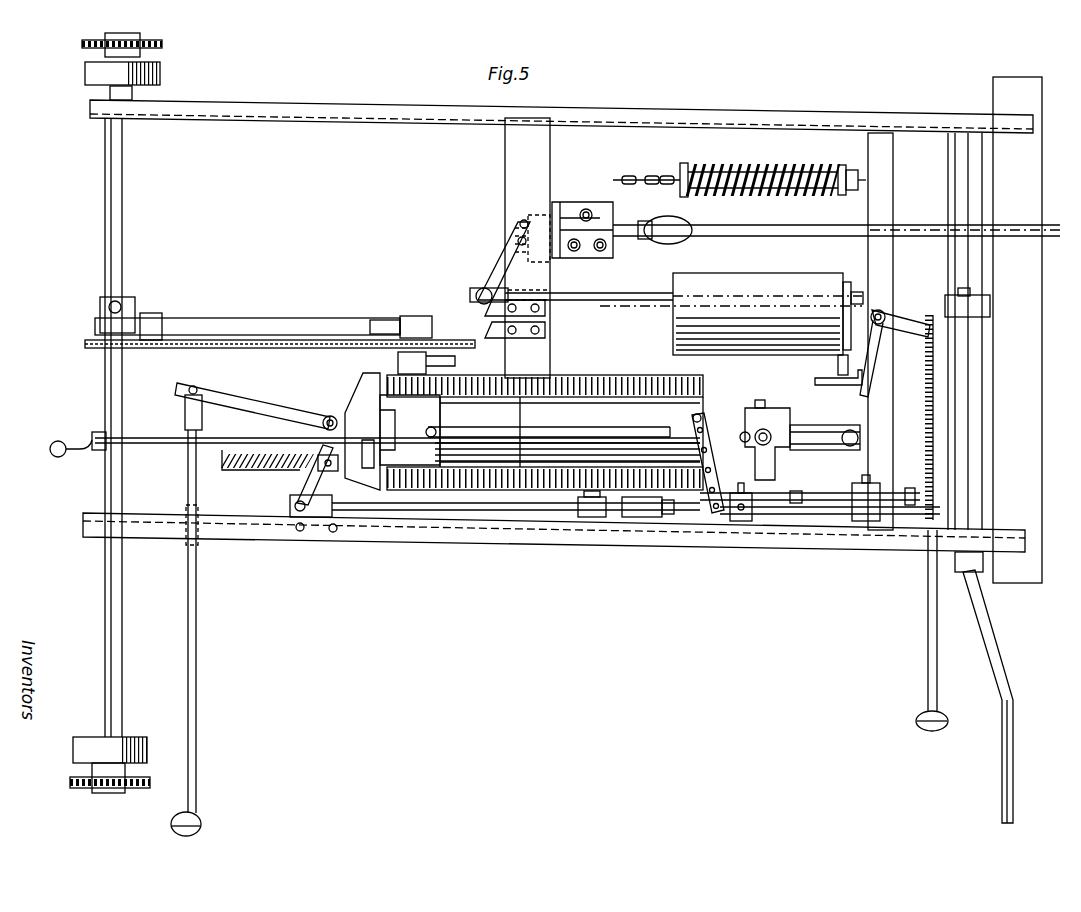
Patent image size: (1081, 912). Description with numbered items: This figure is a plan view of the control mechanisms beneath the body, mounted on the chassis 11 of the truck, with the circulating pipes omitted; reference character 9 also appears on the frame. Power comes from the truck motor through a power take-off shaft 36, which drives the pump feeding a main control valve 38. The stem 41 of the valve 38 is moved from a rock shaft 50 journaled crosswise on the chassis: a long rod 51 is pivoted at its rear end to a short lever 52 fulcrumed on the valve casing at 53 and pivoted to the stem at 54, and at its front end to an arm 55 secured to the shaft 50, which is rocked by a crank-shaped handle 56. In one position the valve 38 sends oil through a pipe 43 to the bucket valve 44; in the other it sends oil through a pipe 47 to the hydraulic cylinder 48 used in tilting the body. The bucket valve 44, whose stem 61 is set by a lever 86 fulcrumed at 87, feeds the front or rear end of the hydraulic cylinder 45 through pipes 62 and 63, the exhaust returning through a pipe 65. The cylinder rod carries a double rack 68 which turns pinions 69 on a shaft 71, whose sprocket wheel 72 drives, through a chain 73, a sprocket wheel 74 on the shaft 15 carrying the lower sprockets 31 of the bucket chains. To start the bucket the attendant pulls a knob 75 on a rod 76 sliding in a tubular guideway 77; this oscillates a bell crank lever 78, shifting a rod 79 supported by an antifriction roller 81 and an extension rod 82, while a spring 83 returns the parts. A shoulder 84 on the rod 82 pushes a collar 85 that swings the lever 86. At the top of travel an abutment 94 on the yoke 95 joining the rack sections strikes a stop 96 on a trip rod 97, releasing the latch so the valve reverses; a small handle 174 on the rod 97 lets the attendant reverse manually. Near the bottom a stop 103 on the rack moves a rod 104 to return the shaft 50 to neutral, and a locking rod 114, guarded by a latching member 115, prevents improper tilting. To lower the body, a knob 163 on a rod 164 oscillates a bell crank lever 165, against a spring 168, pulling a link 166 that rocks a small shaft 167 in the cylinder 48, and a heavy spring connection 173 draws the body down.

The frame side plate 9 is at (637, 330).
The chassis 11 is at (492, 540).
The shaft 15 is at (105, 613).
The lower sprockets 31 is at (82, 44).
The power take-off shaft 36 is at (919, 232).
The main control valve 38 is at (572, 201).
The stem 41 is at (512, 230).
The pipe 43 is at (580, 252).
The bucket valve 44 is at (778, 412).
The hydraulic cylinder 45 is at (618, 400).
The pipe 47 is at (607, 247).
The hydraulic cylinder 48 is at (760, 274).
The rock shaft 50 is at (988, 351).
The rod 51 is at (616, 301).
The lever 52 is at (490, 262).
The fulcrum 53 is at (520, 218).
The pivot 54 is at (510, 241).
The arm 55 is at (948, 297).
The crank-shaped handle 56 is at (1000, 793).
The stem 61 is at (692, 418).
The pipe 62 is at (815, 428).
The pipe 63 is at (566, 426).
The pipe 65 is at (588, 209).
The double rack 68 is at (456, 434).
The pinions 69 is at (352, 410).
The shaft 71 is at (398, 371).
The sprocket wheel 72 is at (455, 361).
The chain 73 is at (285, 320).
The sprocket wheel 74 is at (88, 341).
The knob 75 is at (202, 823).
The rod 76 is at (198, 641).
The tubular guideway 77 is at (188, 556).
The bell crank lever 78 is at (262, 406).
The rod 79 is at (440, 512).
The antifriction roller 81 is at (590, 518).
The extension rod 82 is at (832, 516).
The spring 83 is at (270, 468).
The shoulder 84 is at (652, 519).
The collar 85 is at (730, 512).
The lever 86 is at (720, 506).
The fulcrum 87 is at (690, 384).
The abutment 94 is at (340, 472).
The yoke 95 is at (372, 470).
The stop 96 is at (106, 436).
The trip rod 97 is at (150, 445).
The stop 103 is at (567, 454).
The rod 104 is at (796, 503).
The locking rod 114 is at (894, 493).
The latching member 115 is at (903, 525).
The knob 163 is at (916, 722).
The rod 164 is at (928, 614).
The bell crank lever 165 is at (902, 332).
The link 166 is at (820, 377).
The shaft 167 is at (842, 352).
The spring 168 is at (927, 410).
The spring connection 173 is at (778, 165).
The handle 174 is at (58, 441).